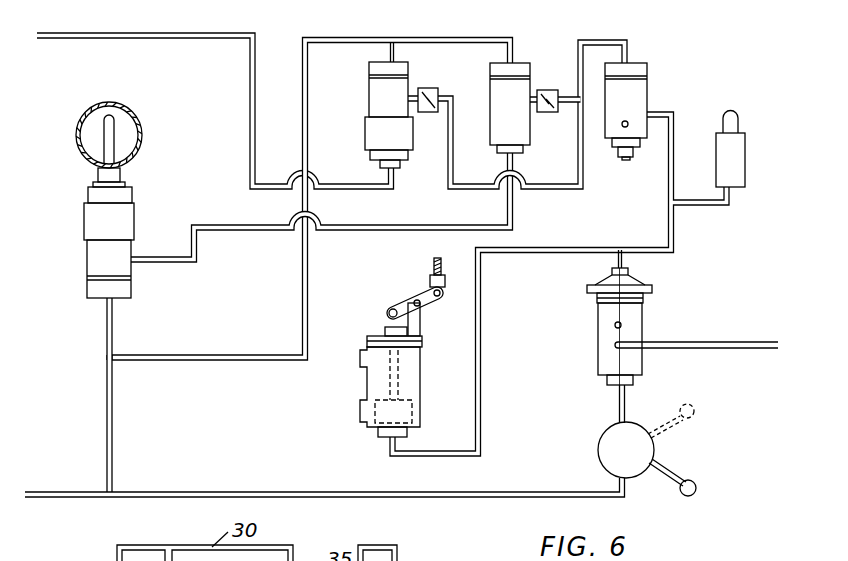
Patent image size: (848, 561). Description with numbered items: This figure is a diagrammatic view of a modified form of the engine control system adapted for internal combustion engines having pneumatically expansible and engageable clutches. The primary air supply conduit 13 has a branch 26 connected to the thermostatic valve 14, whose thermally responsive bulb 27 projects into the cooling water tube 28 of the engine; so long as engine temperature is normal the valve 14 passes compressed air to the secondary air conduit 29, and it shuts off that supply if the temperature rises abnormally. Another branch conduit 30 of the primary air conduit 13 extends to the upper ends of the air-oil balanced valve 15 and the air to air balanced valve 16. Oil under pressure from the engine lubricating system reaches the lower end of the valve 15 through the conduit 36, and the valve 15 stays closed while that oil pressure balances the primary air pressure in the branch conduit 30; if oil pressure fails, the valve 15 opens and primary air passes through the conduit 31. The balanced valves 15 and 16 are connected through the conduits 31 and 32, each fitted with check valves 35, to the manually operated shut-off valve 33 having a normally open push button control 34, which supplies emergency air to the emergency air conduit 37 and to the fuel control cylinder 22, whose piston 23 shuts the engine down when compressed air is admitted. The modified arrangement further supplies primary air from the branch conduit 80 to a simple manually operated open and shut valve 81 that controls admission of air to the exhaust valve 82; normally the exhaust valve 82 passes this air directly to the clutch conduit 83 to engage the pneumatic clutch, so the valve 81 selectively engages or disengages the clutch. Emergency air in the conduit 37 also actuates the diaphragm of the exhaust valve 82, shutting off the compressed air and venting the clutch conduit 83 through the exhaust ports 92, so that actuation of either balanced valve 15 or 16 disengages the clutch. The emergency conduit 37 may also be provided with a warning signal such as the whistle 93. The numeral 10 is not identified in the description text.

The control line 10 is at (616, 230).
The primary air supply conduit 13 is at (105, 423).
The thermostatic valve 14 is at (92, 258).
The air-oil balanced valve 15 is at (367, 105).
The air to air balanced valve 16 is at (493, 137).
The pneumatic cylinder 22 is at (416, 418).
The piston 23 is at (388, 322).
The branch 26 is at (107, 320).
The thermally responsive bulb 27 is at (110, 137).
The cooling water tube 28 is at (141, 143).
The secondary air conduit 29 is at (232, 231).
The branch conduit 30 is at (218, 361).
The conduit 31 is at (450, 121).
The conduit 32 is at (572, 108).
The manually operated shut-off valve 33 is at (647, 93).
The push button control 34 is at (623, 158).
The check valves 35 is at (433, 88).
The conduit 36 is at (205, 39).
The emergency air conduit 37 is at (675, 133).
The branch conduit 80 is at (504, 491).
The manually operated open and shut valve 81 is at (606, 450).
The exhaust valve 82 is at (607, 350).
The clutch conduit 83 is at (728, 340).
The exhaust ports 92 is at (622, 325).
The whistle 93 is at (746, 166).